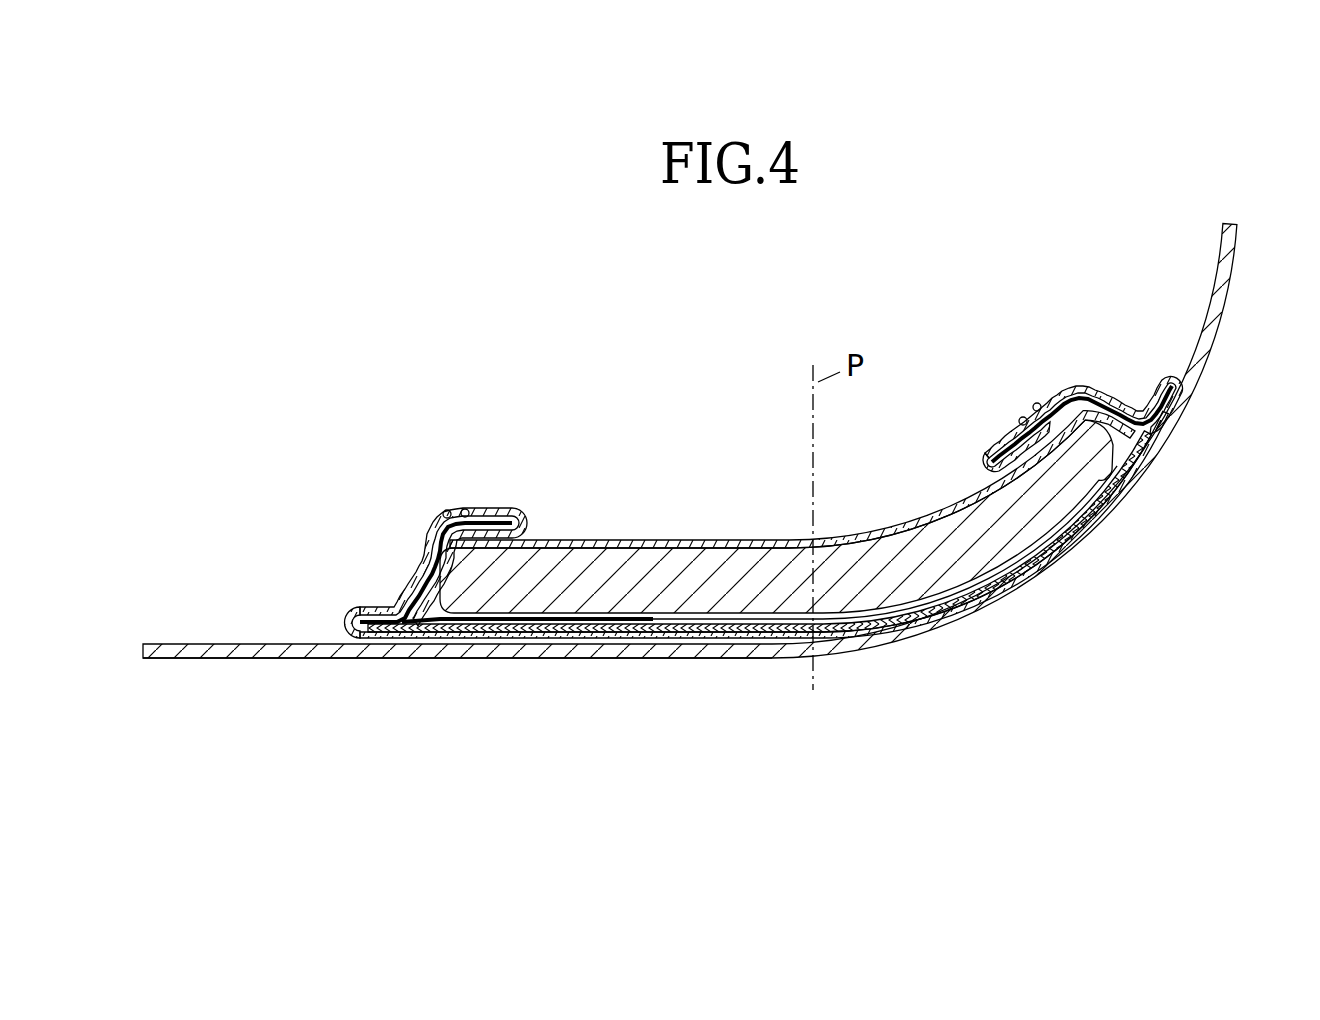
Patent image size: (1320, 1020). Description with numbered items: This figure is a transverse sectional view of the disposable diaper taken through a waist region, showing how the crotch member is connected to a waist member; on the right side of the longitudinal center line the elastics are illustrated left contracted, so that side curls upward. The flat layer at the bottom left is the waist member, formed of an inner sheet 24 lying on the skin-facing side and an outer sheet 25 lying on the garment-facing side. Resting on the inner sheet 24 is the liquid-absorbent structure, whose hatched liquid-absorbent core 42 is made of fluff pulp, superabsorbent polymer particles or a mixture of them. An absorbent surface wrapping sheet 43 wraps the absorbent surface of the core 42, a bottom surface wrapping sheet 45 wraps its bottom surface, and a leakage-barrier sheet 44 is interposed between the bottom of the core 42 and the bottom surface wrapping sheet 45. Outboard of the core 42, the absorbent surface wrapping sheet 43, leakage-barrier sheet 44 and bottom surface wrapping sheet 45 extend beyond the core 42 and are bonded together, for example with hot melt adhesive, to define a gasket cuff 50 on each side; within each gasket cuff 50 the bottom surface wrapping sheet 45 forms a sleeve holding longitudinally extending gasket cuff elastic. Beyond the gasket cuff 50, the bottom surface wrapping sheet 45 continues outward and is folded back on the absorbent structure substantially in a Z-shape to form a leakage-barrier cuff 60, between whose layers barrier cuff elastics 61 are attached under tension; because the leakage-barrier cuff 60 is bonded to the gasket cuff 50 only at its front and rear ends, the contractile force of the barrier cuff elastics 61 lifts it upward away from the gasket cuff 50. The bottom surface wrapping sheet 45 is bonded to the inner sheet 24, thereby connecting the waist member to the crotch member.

The inner sheet 24 is at (188, 643).
The outer sheet 25 is at (232, 659).
The liquid-absorbent core 42 is at (704, 596).
The absorbent surface wrapping sheet 43 is at (642, 539).
The leakage-barrier sheet 44 is at (751, 633).
The bottom surface wrapping sheet 45 is at (853, 639).
The gasket cuff 50 is at (351, 597).
The leakage-barrier cuff 60 is at (511, 488).
The barrier cuff elastic 61 is at (455, 509).